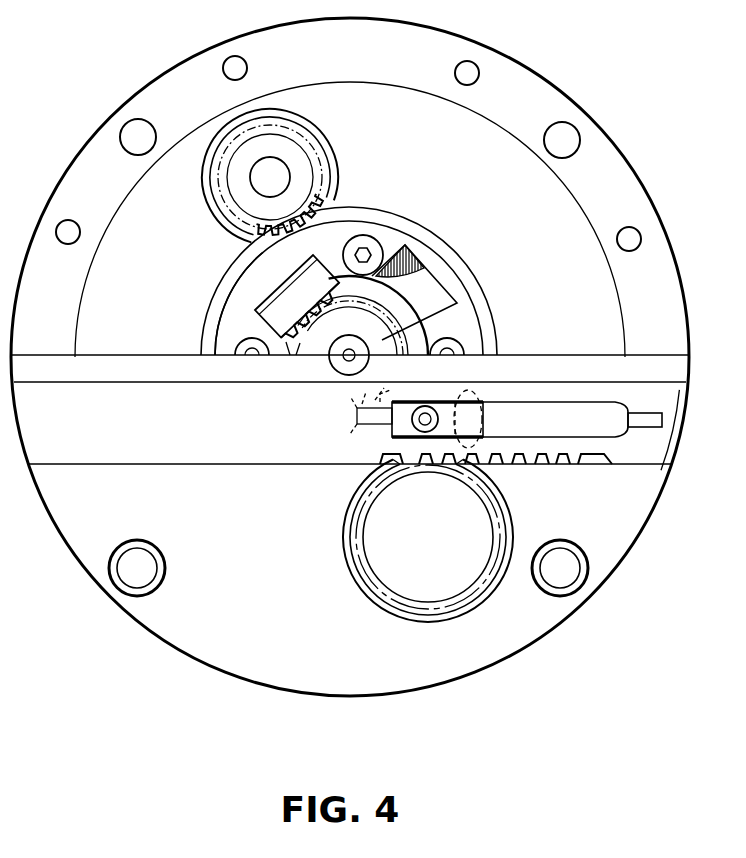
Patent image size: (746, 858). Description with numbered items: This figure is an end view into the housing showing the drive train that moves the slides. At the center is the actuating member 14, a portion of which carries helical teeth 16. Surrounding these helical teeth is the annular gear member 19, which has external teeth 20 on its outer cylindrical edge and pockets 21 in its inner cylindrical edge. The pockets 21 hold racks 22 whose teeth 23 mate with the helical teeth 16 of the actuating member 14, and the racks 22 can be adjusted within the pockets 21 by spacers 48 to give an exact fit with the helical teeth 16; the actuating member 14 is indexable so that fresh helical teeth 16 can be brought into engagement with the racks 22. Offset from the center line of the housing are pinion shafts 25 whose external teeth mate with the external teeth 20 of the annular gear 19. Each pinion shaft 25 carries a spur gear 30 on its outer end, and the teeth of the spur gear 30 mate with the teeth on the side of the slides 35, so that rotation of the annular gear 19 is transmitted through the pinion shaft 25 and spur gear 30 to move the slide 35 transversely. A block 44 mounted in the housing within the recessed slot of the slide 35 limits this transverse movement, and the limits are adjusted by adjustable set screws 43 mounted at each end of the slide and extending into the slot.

The actuating member 14 is at (453, 305).
The helical teeth 16 is at (316, 256).
The annular gear member 19 is at (470, 333).
The external teeth 20 is at (318, 214).
The pockets 21 is at (440, 280).
The racks 22 is at (302, 290).
The teeth 23 is at (345, 215).
The pinion shafts 25 is at (297, 153).
The spur gear 30 is at (460, 603).
The slides 35 is at (643, 455).
The adjustable set screws 43 is at (648, 421).
The block 44 is at (470, 415).
The spacers 48 is at (250, 288).